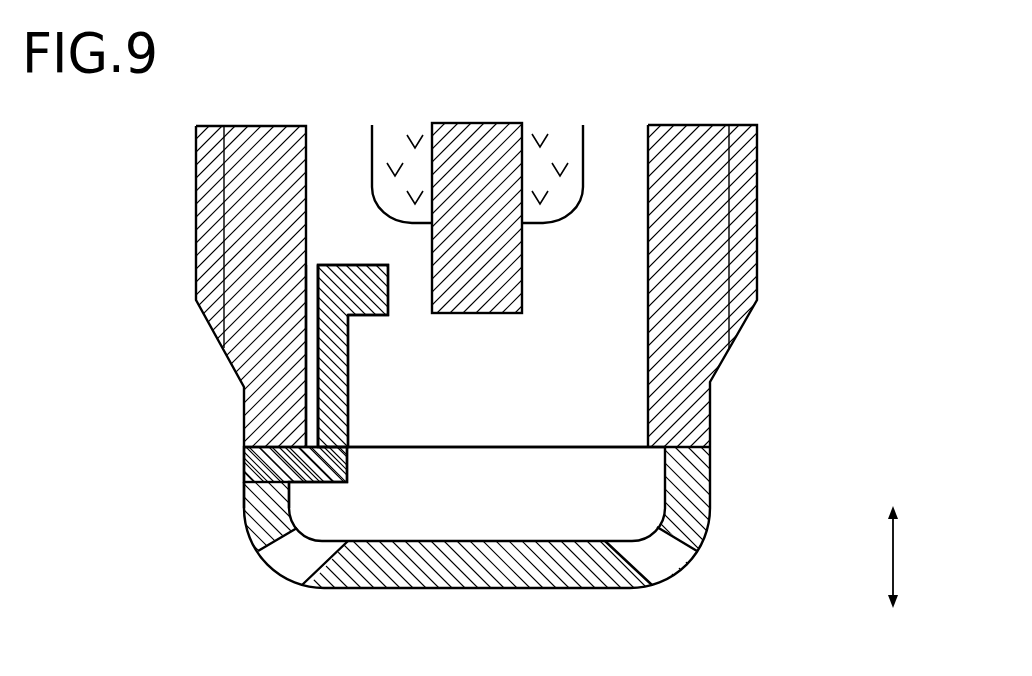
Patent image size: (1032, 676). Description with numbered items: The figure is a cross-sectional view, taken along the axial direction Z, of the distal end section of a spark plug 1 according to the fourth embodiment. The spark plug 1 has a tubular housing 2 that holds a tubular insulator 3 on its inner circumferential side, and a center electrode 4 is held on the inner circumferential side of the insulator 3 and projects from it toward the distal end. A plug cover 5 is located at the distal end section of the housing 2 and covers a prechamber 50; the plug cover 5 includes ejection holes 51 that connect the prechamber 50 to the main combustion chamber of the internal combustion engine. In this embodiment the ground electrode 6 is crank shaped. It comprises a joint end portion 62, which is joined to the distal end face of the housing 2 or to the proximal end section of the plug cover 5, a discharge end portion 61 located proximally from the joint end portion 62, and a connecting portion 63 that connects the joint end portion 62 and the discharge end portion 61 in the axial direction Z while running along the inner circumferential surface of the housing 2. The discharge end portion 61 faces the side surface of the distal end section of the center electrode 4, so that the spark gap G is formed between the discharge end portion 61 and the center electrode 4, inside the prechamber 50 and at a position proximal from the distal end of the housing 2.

The spark plug 1 is at (200, 597).
The housing 2 is at (707, 139).
The insulator 3 is at (393, 137).
The center electrode 4 is at (483, 276).
The plug cover 5 is at (525, 545).
The prechamber 50 is at (596, 390).
The ejection holes 51 is at (665, 562).
The ground electrode 6 is at (333, 300).
The discharge end portion 61 is at (352, 277).
The joint end portion 62 is at (277, 463).
The connecting portion 63 is at (340, 393).
The spark gap G is at (315, 340).
The axial direction Z is at (905, 557).